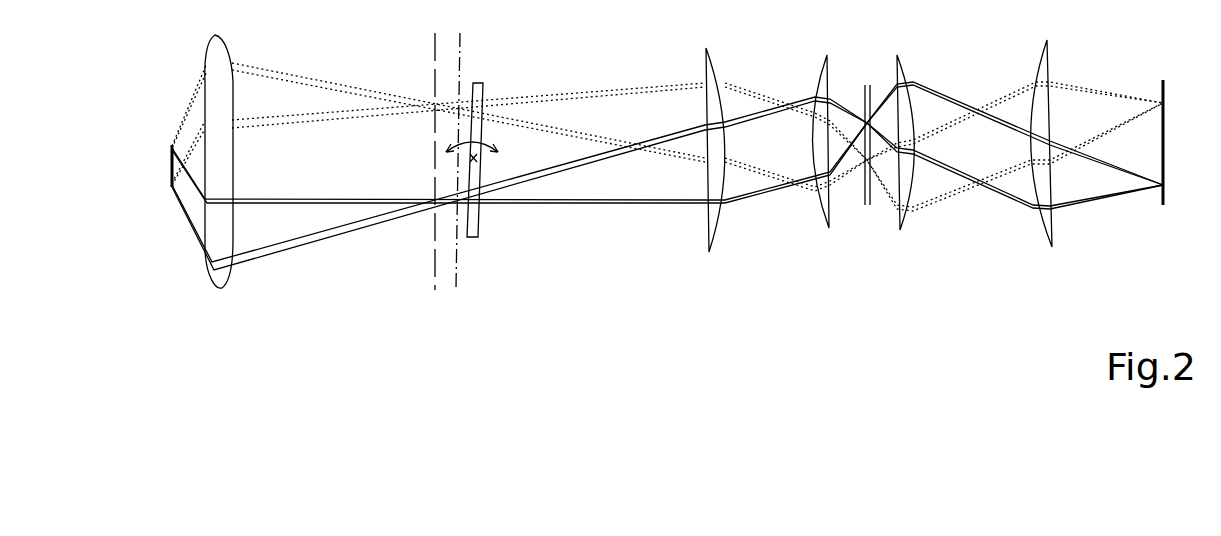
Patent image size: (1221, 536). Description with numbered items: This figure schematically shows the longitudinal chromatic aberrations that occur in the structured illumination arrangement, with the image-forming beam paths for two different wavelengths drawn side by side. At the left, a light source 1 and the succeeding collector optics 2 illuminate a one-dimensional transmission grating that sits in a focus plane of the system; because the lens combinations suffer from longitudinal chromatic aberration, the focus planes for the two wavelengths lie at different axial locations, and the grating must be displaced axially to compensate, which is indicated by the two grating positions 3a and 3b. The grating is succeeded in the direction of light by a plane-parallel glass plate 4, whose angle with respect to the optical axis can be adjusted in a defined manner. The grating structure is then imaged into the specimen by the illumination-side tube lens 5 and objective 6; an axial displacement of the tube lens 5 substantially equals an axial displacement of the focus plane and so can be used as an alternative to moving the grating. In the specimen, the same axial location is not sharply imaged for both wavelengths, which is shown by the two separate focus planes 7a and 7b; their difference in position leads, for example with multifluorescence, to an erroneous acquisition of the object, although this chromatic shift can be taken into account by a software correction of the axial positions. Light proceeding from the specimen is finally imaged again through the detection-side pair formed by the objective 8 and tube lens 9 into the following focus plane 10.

The light source 1 is at (172, 188).
The collector optics 2 is at (229, 280).
The grating position 3a is at (437, 268).
The grating position 3b is at (466, 275).
The plane-parallel glass plate 4 is at (483, 236).
The tube lens 5 is at (710, 252).
The objective 6 is at (826, 228).
The focus plane 7a is at (865, 205).
The focus plane 7b is at (870, 207).
The objective 8 is at (910, 225).
The tube lens 9 is at (1052, 248).
The focus plane 10 is at (1163, 205).